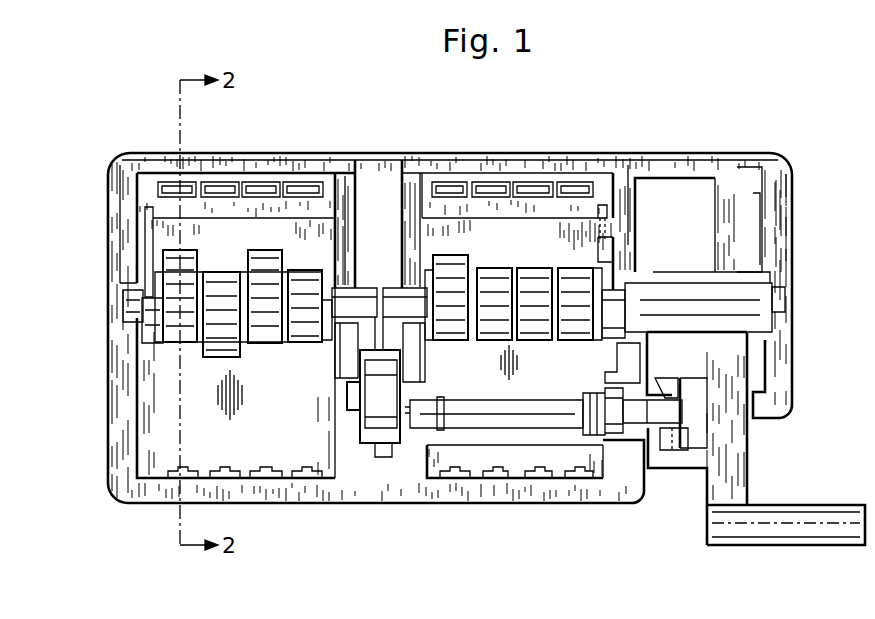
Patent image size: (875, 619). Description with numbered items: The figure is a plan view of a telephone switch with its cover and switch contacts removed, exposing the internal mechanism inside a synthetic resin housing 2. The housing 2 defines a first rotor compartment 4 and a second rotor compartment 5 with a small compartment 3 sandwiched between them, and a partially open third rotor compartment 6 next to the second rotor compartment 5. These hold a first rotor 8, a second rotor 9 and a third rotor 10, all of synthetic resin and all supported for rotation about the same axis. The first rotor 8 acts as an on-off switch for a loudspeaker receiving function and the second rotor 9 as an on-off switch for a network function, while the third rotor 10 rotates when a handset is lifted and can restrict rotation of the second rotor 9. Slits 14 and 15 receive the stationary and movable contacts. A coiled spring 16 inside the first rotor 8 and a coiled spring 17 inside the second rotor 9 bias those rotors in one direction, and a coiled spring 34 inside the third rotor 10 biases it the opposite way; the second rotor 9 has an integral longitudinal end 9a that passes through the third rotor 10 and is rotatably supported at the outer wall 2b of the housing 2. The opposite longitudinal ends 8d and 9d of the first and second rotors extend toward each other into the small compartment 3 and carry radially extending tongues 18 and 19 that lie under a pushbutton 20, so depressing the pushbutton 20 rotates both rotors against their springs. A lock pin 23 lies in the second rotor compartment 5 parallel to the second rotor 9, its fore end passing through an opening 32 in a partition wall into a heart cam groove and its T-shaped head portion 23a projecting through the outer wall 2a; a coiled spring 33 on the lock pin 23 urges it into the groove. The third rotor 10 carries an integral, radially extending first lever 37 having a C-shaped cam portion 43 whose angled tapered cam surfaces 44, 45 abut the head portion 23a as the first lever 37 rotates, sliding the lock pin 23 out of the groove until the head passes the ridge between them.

The housing 2 is at (418, 158).
The outer wall 2a is at (618, 470).
The outer wall 2b is at (790, 398).
The small compartment 3 is at (378, 195).
The first rotor compartment 4 is at (157, 402).
The second rotor compartment 5 is at (560, 245).
The third rotor compartment 6 is at (697, 205).
The first rotor 8 is at (268, 330).
The longitudinal end 8d is at (343, 305).
The second rotor 9 is at (535, 270).
The longitudinal end 9a is at (780, 300).
The longitudinal end 9d is at (413, 308).
The third rotor 10 is at (640, 280).
The slits 14 is at (490, 190).
The slits 15 is at (575, 470).
The coiled spring 16 is at (143, 240).
The coiled spring 17 is at (600, 205).
The tongue 18 is at (345, 335).
The tongue 19 is at (405, 330).
The pushbutton 20 is at (375, 432).
The lock pin 23 is at (470, 408).
The head portion 23a is at (670, 410).
The opening 32 is at (425, 410).
The coiled spring 33 is at (503, 430).
The coiled spring 34 is at (760, 222).
The first lever 37 is at (727, 490).
The cam portion 43 is at (683, 472).
The tapered cam surface 44 is at (665, 380).
The tapered cam surface 45 is at (695, 440).